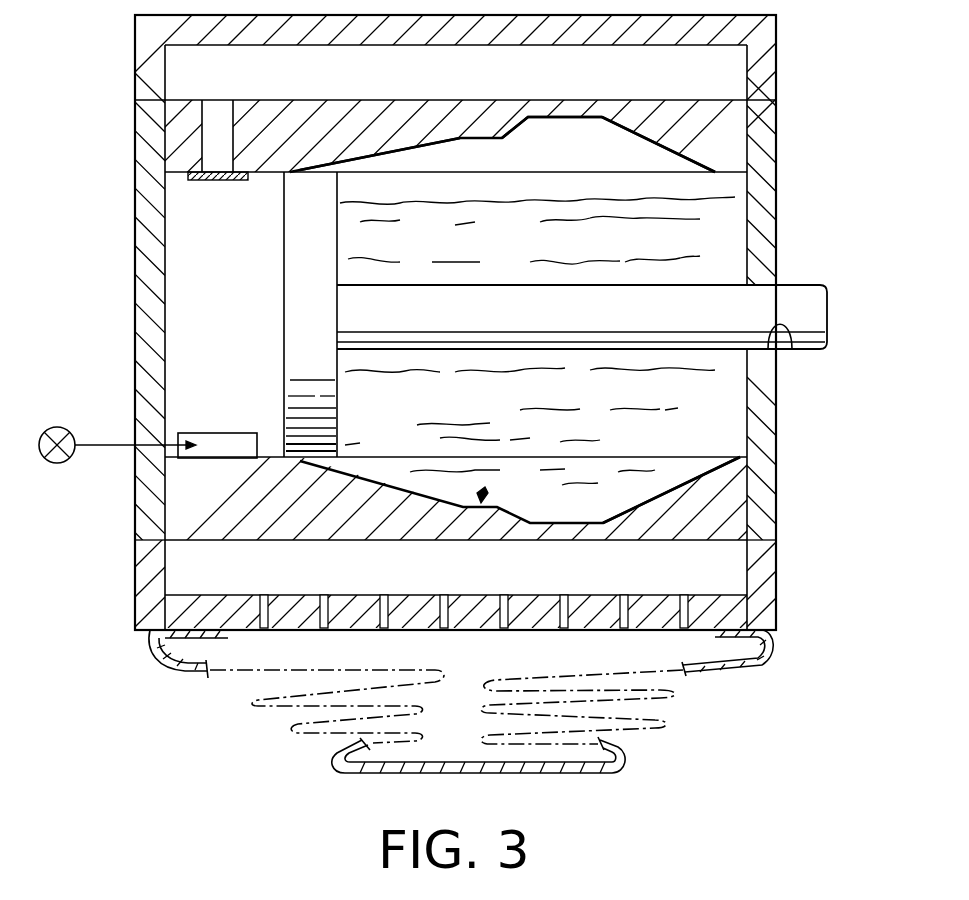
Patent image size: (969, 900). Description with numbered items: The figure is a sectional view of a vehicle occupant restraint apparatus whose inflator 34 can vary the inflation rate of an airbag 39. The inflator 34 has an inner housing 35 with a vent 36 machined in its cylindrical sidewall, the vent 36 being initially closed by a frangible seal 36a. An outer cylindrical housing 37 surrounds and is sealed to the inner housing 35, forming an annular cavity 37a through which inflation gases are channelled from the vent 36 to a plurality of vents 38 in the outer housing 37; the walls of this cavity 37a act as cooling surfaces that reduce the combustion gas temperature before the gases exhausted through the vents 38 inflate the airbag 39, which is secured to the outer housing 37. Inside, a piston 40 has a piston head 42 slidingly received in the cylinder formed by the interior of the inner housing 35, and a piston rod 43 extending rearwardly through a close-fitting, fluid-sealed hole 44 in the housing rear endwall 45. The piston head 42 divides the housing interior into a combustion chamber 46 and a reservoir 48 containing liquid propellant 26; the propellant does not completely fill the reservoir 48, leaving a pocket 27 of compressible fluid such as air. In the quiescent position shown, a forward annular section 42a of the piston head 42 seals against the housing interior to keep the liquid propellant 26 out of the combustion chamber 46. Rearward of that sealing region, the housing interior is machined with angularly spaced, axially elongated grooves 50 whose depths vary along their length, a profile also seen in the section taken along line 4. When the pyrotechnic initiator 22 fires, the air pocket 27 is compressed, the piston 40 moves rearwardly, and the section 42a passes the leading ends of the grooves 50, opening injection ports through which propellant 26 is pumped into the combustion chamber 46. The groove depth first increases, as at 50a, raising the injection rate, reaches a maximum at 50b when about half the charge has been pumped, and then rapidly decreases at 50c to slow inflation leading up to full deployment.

The pyrotechnic initiator 22 is at (225, 444).
The liquid propellant 26 is at (608, 435).
The pocket of compressible fluid 27 is at (612, 152).
The inflator 34 is at (803, 161).
The inner housing 35 is at (335, 120).
The vent 36 is at (230, 140).
The frangible seal 36a is at (212, 180).
The outer cylindrical housing 37 is at (760, 34).
The annular cavity 37a is at (681, 85).
The vents 38 is at (264, 600).
The airbag 39 is at (676, 698).
The piston 40 is at (351, 278).
The piston head 42 is at (284, 341).
The forward annular section of piston head 42a is at (298, 466).
The piston rod 43 is at (549, 325).
The fluid-sealed hole 44 is at (792, 349).
The housing rear endwall 45 is at (763, 437).
The combustion chamber 46 is at (229, 397).
The reservoir 48 is at (424, 407).
The grooves 50 is at (487, 142).
The groove portion of increasing depth 50a is at (435, 150).
The groove portion of maximum depth 50b is at (543, 118).
The groove portion of decreasing depth 50c is at (672, 483).
The section line 4- 4 is at (565, 140).